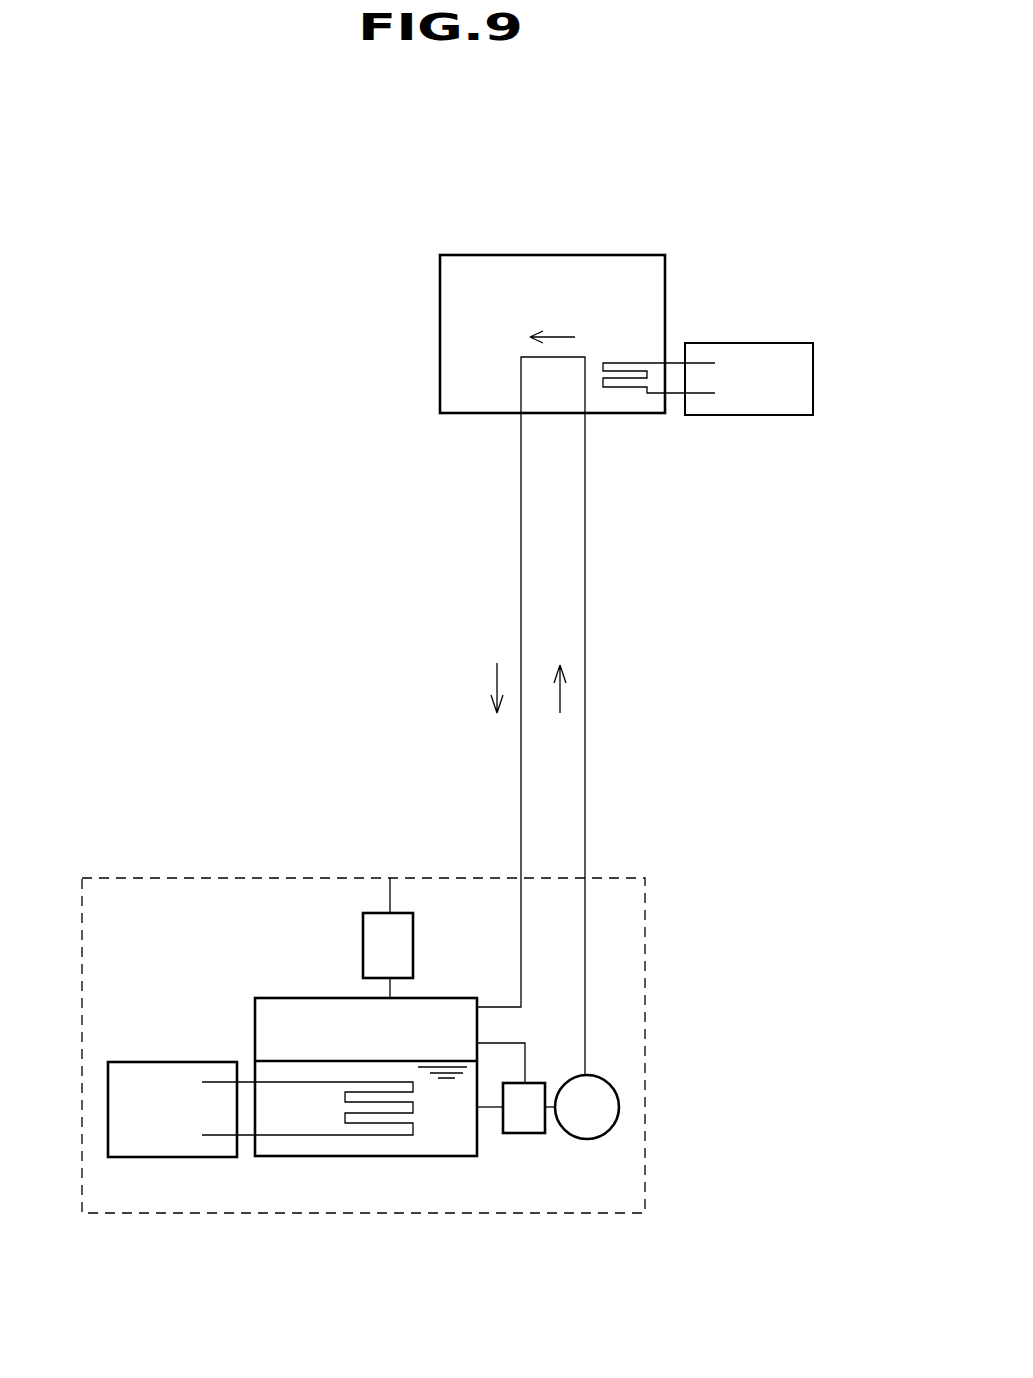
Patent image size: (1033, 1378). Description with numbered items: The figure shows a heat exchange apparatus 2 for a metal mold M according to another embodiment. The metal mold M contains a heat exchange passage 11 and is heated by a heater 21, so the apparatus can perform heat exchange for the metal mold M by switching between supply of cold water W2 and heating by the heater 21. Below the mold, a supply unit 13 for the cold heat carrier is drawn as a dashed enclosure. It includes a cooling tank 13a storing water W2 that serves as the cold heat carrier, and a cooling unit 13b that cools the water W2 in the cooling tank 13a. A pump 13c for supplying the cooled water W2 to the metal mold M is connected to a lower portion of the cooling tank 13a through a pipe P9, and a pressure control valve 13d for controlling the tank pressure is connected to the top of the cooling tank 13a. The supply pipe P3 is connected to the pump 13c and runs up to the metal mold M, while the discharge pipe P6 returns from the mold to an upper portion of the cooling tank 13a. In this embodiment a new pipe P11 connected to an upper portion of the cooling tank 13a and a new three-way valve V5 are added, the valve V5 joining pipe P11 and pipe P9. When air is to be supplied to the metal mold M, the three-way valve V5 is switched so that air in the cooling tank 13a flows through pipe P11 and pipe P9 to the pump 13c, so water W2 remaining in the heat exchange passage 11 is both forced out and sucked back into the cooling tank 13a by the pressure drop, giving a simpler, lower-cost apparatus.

The metal mold M is at (640, 293).
The heater 21 is at (792, 415).
The heat exchange passage 11 is at (521, 397).
The discharge pipe P6 is at (521, 508).
The supply pipe P3 is at (585, 506).
The heat exchange apparatus 2 is at (282, 679).
The supply unit 13 is at (138, 866).
The cooling tank 13a is at (278, 998).
The cooling unit 13b is at (133, 1062).
The pump 13c is at (580, 1123).
The pressure control valve 13d is at (413, 932).
The water W2 is at (452, 1061).
The pipe P11 is at (527, 1070).
The pipe P9 is at (485, 1110).
The three-way valve V5 is at (523, 1133).